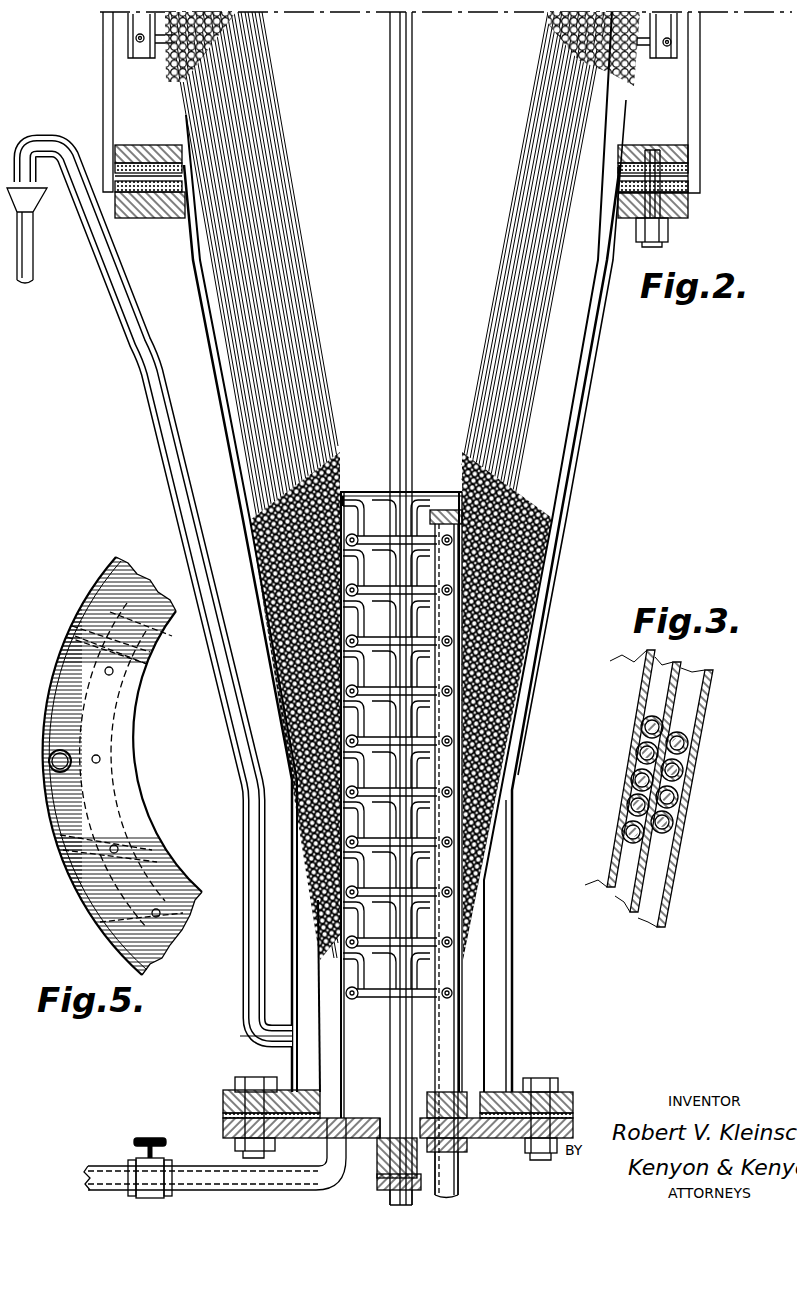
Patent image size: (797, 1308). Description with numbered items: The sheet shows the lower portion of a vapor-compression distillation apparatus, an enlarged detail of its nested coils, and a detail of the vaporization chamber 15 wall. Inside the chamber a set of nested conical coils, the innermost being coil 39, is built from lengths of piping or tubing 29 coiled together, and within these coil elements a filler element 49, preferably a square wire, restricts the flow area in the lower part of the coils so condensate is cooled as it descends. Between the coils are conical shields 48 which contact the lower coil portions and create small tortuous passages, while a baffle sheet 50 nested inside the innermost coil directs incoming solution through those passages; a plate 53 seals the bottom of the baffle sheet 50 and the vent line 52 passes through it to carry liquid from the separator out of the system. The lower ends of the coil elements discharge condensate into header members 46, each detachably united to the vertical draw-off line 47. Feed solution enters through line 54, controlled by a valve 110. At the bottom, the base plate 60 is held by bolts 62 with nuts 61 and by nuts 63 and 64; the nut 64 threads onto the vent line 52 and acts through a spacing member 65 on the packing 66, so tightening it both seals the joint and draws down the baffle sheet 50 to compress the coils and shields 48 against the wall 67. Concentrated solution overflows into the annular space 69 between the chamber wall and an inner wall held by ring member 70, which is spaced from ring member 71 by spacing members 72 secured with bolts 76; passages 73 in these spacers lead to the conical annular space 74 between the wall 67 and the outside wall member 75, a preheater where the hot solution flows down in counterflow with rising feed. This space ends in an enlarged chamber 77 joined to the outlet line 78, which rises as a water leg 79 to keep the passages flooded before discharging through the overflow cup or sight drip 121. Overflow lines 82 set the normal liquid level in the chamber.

In FIG. 5, the vaporization chamber 15 is at (98, 572).
In FIG. 3, the lengths of piping or tubing 29 is at (690, 731).
In FIG. 2, the conical coil 39 is at (166, 76).
In FIG. 2, the header member 46 is at (419, 538).
In FIG. 2, the vertical draw-off line 47 is at (450, 1013).
In FIG. 2, the conical shield 48 is at (264, 228).
In FIG. 3, the conical shield 48 is at (644, 697).
In FIG. 3, the filler element 49 is at (690, 752).
In FIG. 2, the baffle sheet 50 is at (527, 152).
In FIG. 2, the vent line 52 is at (410, 402).
In FIG. 2, the plate 53 is at (368, 490).
In FIG. 2, the line 54 is at (213, 1172).
In FIG. 2, the base plate 60 is at (573, 1119).
In FIG. 2, the nuts 61 is at (540, 1142).
In FIG. 2, the bolts 62 is at (547, 1091).
In FIG. 2, the nut 63 is at (470, 1143).
In FIG. 2, the nut 64 is at (380, 1188).
In FIG. 2, the spacing member 65 is at (387, 1156).
In FIG. 2, the packing 66 is at (382, 1117).
In FIG. 2, the wall 67 is at (578, 404).
In FIG. 2, the annular space 69 is at (698, 103).
In FIG. 2, the ring member 70 is at (146, 147).
In FIG. 2, the ring member 71 is at (688, 201).
In FIG. 2, the spacing members 72 is at (688, 177).
In FIG. 5, the spacing members 72 is at (107, 645).
In FIG. 2, the passages 73 is at (153, 200).
In FIG. 5, the passages 73 is at (151, 663).
In FIG. 2, the conical annular space 74 is at (602, 318).
In FIG. 2, the outside wall member 75 is at (597, 350).
In FIG. 2, the bolts 76 is at (670, 231).
In FIG. 2, the enlarged chamber 77 is at (493, 1046).
In FIG. 2, the outlet line 78 is at (255, 1037).
In FIG. 2, the water leg 79 is at (137, 289).
In FIG. 5, the overflow lines 82 is at (48, 739).
In FIG. 2, the valve 110 is at (142, 1158).
In FIG. 2, the overflow cup or sight drip 121 is at (28, 233).